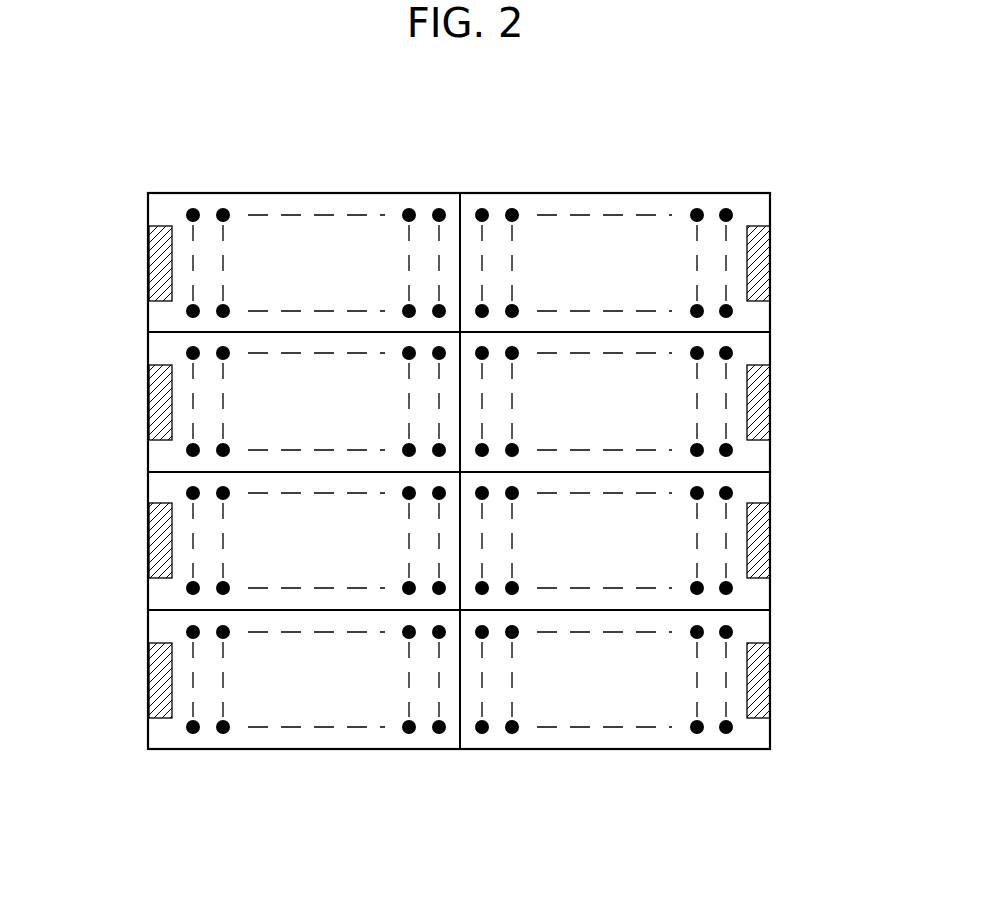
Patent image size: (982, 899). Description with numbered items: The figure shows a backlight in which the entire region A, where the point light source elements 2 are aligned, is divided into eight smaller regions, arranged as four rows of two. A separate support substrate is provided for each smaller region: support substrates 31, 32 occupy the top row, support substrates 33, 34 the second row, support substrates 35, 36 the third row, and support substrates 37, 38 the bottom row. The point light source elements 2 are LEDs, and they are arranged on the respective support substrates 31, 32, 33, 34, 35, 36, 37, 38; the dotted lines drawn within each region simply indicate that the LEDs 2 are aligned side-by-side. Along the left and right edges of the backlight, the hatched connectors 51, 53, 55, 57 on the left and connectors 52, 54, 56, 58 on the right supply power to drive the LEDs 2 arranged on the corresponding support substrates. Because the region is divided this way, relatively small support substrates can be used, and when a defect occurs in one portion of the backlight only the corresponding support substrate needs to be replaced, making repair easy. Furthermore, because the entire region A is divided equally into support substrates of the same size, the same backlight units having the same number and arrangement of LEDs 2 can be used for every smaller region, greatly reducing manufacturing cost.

The point light source element 2 is at (483, 207).
The support substrate 31 is at (288, 203).
The support substrate 32 is at (662, 203).
The support substrate 33 is at (165, 457).
The support substrate 34 is at (753, 455).
The support substrate 35 is at (165, 596).
The support substrate 36 is at (753, 595).
The support substrate 37 is at (165, 733).
The support substrate 38 is at (753, 733).
The connector 51 is at (160, 263).
The connector 52 is at (755, 262).
The connector 53 is at (162, 388).
The connector 54 is at (755, 400).
The connector 55 is at (162, 540).
The connector 56 is at (755, 540).
The connector 57 is at (162, 680).
The connector 58 is at (755, 677).